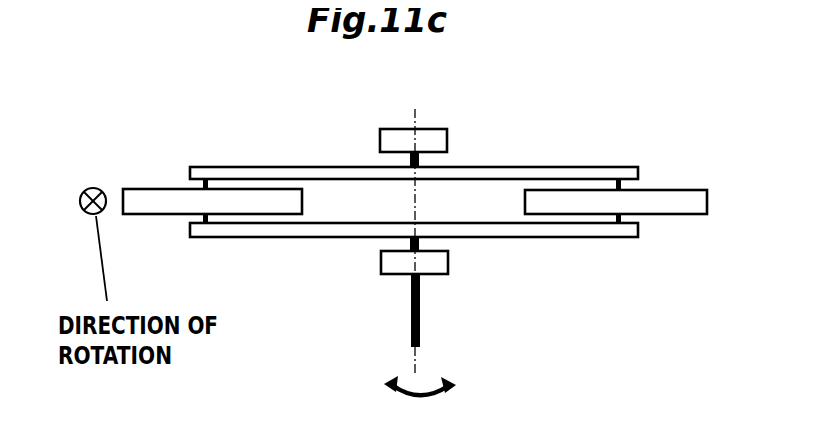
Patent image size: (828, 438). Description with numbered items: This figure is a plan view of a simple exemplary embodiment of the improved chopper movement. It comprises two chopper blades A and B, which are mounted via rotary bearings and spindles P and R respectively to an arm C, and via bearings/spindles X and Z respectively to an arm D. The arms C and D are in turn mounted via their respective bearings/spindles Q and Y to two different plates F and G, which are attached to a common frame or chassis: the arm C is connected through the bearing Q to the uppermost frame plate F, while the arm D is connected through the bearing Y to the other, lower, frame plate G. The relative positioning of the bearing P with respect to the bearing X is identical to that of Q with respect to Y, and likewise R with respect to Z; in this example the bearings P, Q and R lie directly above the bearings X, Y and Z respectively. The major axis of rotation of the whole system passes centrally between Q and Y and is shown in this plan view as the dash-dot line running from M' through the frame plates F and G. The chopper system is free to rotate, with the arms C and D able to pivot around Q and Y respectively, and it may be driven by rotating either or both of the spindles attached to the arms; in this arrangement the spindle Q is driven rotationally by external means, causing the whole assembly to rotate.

The chopper blade A is at (149, 203).
The chopper blade B is at (655, 202).
The arm C is at (502, 230).
The arm D is at (515, 173).
The frame plate G is at (443, 142).
The frame plate F is at (440, 262).
The bearing/spindle X is at (205, 170).
The rotary bearing and spindle P is at (207, 230).
The bearing/spindle Z is at (613, 160).
The rotary bearing and spindle R is at (614, 242).
The bearing/spindle Y is at (408, 165).
The bearing/spindle Q is at (422, 243).
The major axis of rotation end M' is at (428, 234).